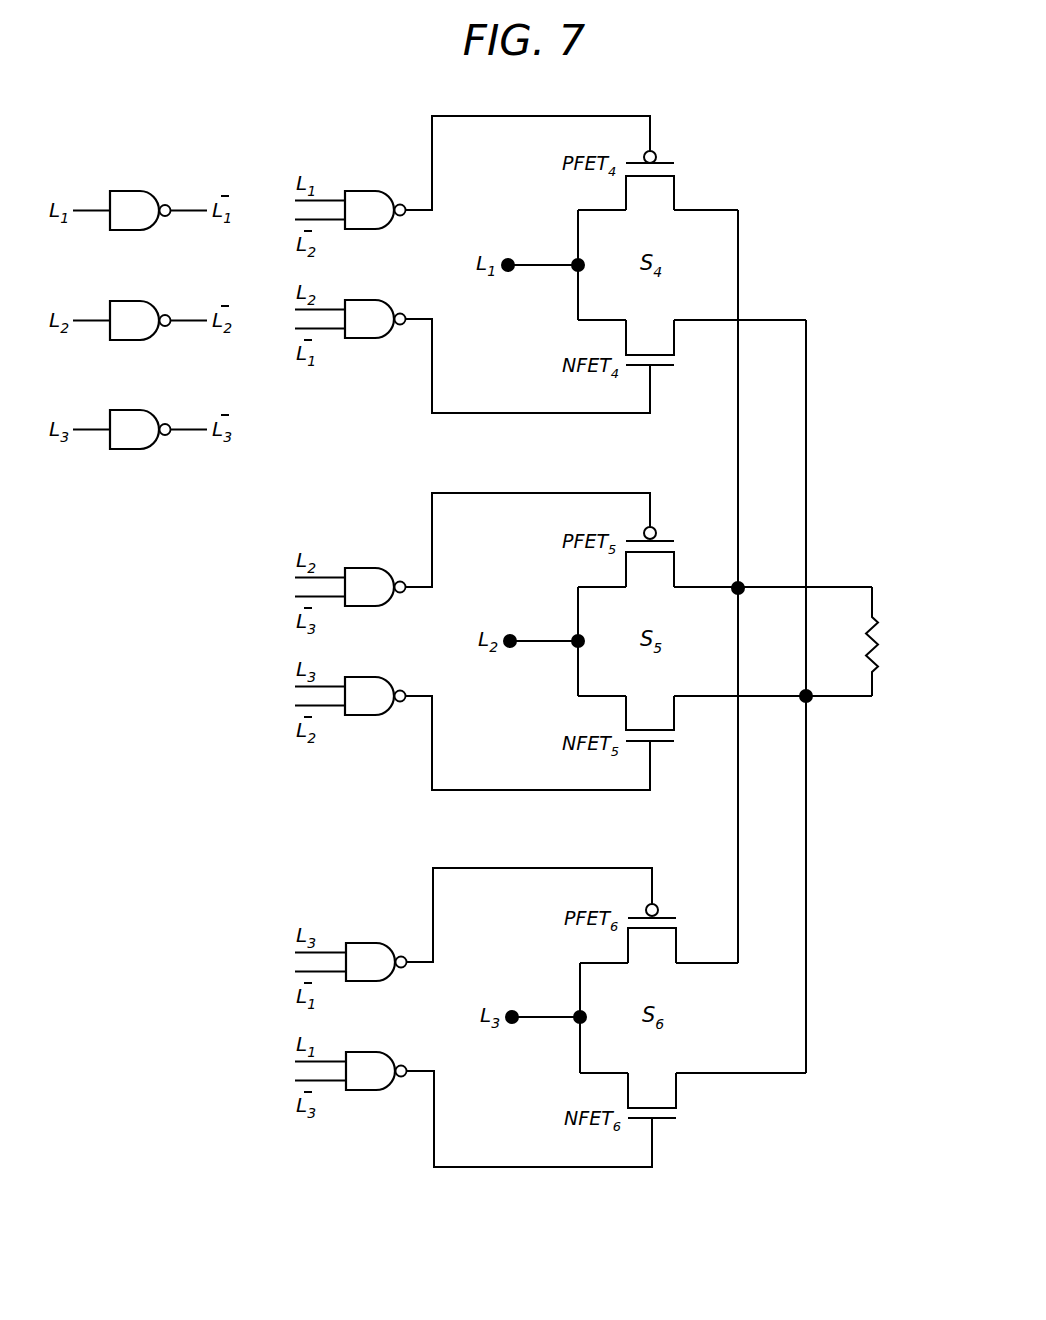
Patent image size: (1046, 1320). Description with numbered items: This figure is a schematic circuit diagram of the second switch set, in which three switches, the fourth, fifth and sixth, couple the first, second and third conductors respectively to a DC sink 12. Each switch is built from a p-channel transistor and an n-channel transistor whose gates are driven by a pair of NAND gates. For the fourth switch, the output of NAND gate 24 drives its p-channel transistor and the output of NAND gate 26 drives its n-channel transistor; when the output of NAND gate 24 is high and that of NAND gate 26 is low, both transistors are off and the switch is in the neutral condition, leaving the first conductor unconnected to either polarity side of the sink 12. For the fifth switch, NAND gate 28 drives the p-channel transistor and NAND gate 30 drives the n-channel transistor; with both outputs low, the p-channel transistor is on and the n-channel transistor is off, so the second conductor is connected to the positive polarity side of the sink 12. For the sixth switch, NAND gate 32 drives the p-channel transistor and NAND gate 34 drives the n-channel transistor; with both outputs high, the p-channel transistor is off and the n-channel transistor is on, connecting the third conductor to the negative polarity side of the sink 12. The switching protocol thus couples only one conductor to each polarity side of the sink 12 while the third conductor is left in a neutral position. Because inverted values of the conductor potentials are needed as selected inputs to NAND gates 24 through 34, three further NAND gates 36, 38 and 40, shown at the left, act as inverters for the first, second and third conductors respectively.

The DC sink 12 is at (900, 641).
The NAND gate 24 is at (361, 191).
The NAND gate 26 is at (361, 300).
The NAND gate 28 is at (361, 568).
The NAND gate 30 is at (361, 677).
The NAND gate 32 is at (362, 943).
The NAND gate 34 is at (362, 1052).
The NAND gate 36 is at (126, 191).
The NAND gate 38 is at (126, 301).
The NAND gate 40 is at (126, 410).